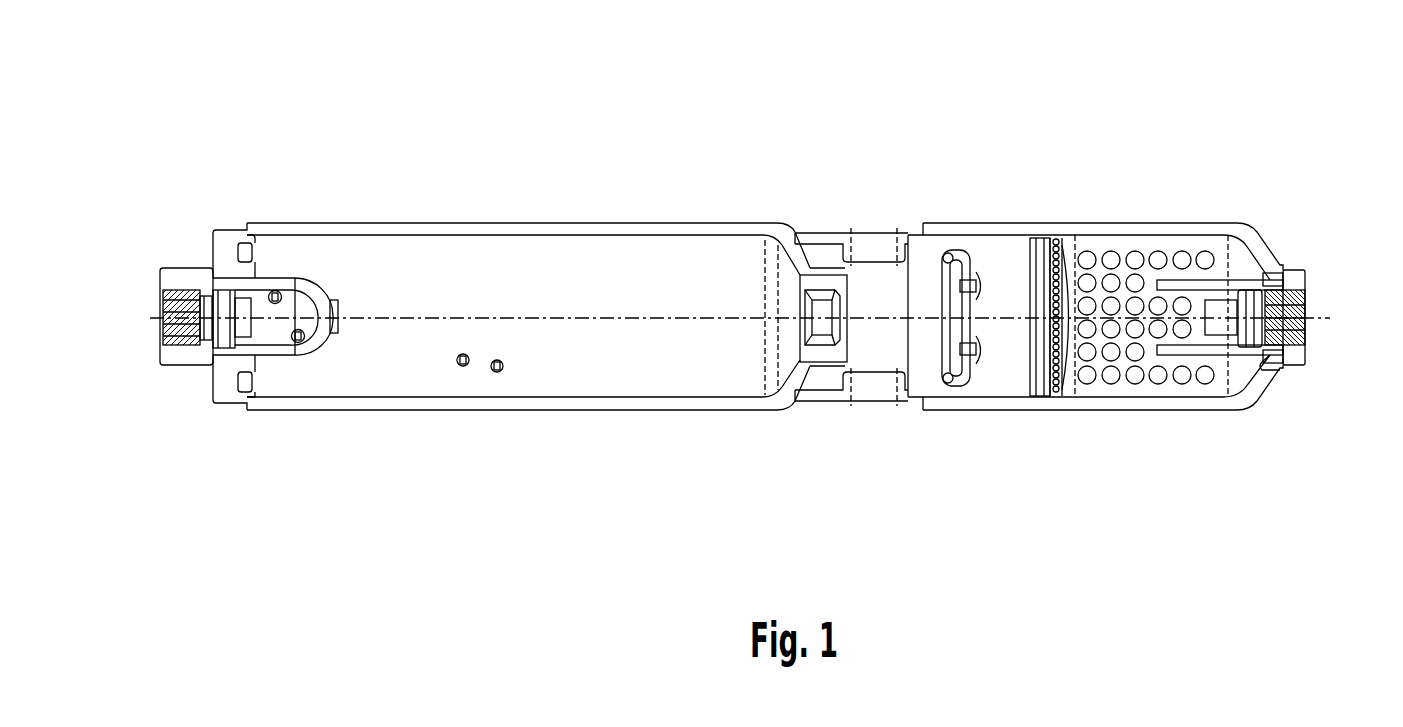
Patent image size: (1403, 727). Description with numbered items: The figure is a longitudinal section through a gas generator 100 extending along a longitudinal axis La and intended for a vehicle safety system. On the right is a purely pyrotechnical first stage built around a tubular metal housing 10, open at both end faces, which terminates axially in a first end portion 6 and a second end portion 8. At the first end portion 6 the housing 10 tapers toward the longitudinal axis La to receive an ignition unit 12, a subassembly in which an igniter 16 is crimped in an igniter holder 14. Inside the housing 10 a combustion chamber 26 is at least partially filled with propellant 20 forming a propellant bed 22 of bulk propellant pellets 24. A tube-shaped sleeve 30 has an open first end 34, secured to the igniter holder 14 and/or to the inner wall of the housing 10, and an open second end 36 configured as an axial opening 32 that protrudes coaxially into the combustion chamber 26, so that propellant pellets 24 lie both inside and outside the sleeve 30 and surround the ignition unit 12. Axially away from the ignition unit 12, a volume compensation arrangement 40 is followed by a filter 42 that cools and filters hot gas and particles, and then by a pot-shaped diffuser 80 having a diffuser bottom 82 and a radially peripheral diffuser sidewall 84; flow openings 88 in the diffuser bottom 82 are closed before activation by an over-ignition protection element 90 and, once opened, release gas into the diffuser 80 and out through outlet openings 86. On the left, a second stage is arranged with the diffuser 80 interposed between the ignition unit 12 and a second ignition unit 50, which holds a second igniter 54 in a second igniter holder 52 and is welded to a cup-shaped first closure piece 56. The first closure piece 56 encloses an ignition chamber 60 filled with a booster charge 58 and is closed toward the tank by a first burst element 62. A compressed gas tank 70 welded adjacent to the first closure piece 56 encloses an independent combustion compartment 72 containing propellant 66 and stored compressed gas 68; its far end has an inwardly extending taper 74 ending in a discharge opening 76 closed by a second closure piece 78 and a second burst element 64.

The gas generator 100 is at (683, 116).
The longitudinal axis La is at (805, 320).
The first end portion 6 is at (1296, 270).
The second end portion 8 is at (922, 235).
The housing 10 is at (1214, 222).
The ignition unit 12 is at (1318, 368).
The igniter holder 14 is at (1297, 281).
The igniter 16 is at (1235, 380).
The propellant 20 is at (1098, 396).
The propellant bed 22 is at (1166, 380).
The propellant pellets 24 is at (1091, 252).
The combustion chamber 26 is at (1120, 242).
The sleeve 30 is at (1238, 230).
The axial opening 32 is at (1152, 245).
The first end 34 is at (1275, 368).
The second end 36 is at (1150, 380).
The volume compensation arrangement 40 is at (1048, 400).
The filter 42 is at (1018, 396).
The second ignition unit 50 is at (162, 375).
The second igniter holder 52 is at (190, 268).
The second igniter 54 is at (215, 337).
The first closure piece 56 is at (221, 395).
The booster charge 58 is at (298, 345).
The ignition chamber 60 is at (270, 283).
The first burst element 62 is at (340, 305).
The second burst element 64 is at (800, 297).
The propellant 66 is at (498, 373).
The compressed gas 68 is at (630, 377).
The compressed gas tank 70 is at (490, 222).
The combustion compartment 72 is at (605, 278).
The taper 74 is at (790, 232).
The discharge opening 76 is at (808, 387).
The second closure piece 78 is at (826, 368).
The diffuser 80 is at (905, 412).
The diffuser bottom 82 is at (1000, 385).
The diffuser sidewall 84 is at (812, 233).
The outlet openings 86 is at (875, 252).
The flow openings 88 is at (962, 250).
The over-ignition protection element 90 is at (945, 310).